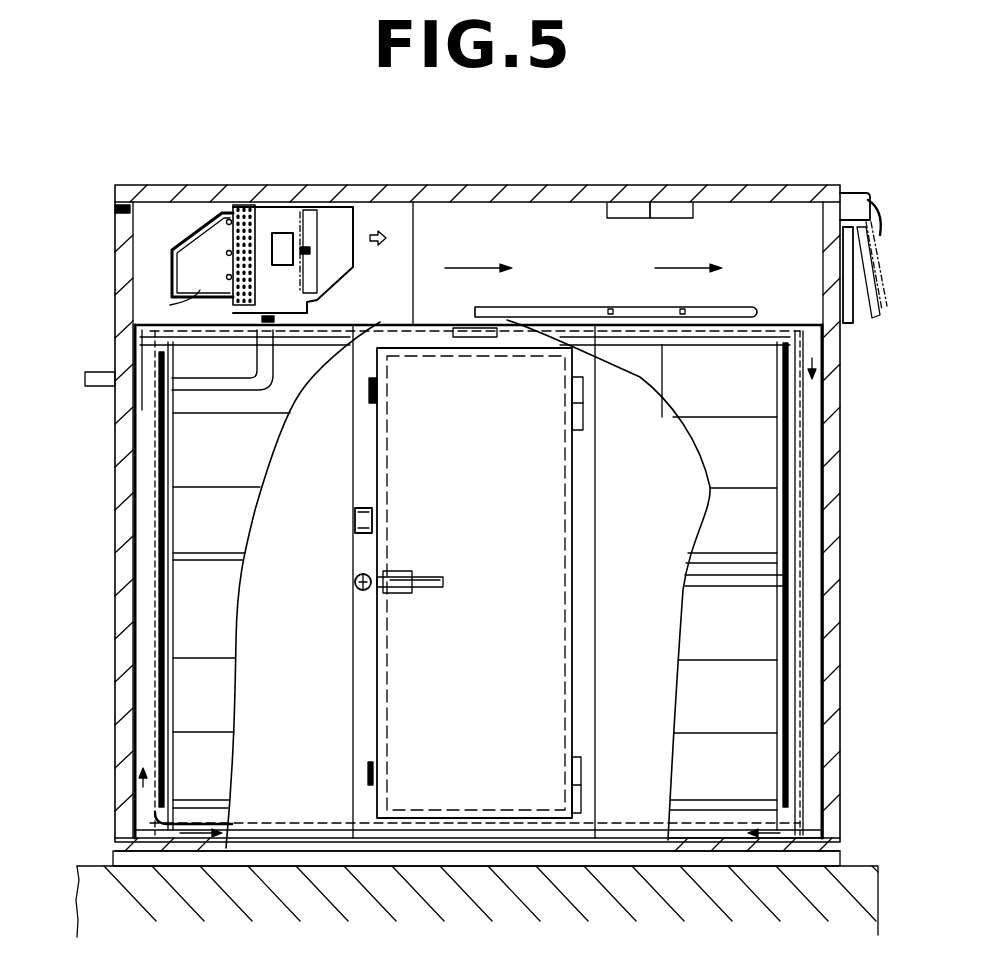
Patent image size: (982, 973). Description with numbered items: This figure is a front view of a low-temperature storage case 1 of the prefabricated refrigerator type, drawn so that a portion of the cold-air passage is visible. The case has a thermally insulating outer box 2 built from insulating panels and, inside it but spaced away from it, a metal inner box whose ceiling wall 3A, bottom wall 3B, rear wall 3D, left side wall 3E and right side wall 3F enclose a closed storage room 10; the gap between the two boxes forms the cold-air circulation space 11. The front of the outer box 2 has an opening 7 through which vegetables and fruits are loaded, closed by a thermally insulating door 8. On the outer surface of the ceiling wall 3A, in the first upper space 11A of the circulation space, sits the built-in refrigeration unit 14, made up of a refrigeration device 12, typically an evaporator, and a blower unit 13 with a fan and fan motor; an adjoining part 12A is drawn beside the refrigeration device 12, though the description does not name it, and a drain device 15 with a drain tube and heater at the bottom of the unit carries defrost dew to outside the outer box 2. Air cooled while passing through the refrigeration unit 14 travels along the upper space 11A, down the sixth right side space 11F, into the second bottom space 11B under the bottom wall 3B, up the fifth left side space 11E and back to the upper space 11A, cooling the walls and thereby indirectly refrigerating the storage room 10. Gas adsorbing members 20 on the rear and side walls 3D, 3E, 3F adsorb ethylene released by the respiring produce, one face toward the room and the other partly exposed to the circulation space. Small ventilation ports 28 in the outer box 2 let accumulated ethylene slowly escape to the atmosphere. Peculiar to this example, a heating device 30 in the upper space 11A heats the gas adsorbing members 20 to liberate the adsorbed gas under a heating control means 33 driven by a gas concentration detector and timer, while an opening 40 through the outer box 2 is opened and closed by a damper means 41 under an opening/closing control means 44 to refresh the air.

The low-temperature storage case 1 is at (395, 186).
The thermally insulating outer box 2 is at (522, 195).
The ceiling wall 3A is at (813, 327).
The bottom wall 3B is at (215, 822).
The rear wall 3D is at (140, 333).
The left side wall 3E is at (159, 598).
The right side wall 3F is at (810, 432).
The opening 7 is at (570, 495).
The thermally insulating door 8 is at (540, 555).
The storage room 10 is at (716, 714).
The cold-air circulation space 11 is at (570, 215).
The first upper space 11A is at (480, 240).
The second bottom space 11B is at (712, 838).
The fifth left side space 11E is at (147, 472).
The sixth right side space 11F is at (815, 470).
The refrigeration device 12 is at (245, 204).
The fan guide 12A is at (227, 215).
The blower unit 13 is at (307, 215).
The refrigeration unit 14 is at (315, 117).
The drain device 15 is at (95, 373).
The gas adsorbing members 20 is at (262, 410).
The small ventilation ports 28 is at (114, 207).
The heating device 30 is at (735, 306).
The heating control means 33 is at (622, 204).
The opening 40 is at (835, 258).
The damper means 41 is at (848, 323).
The opening/closing control means 44 is at (680, 204).